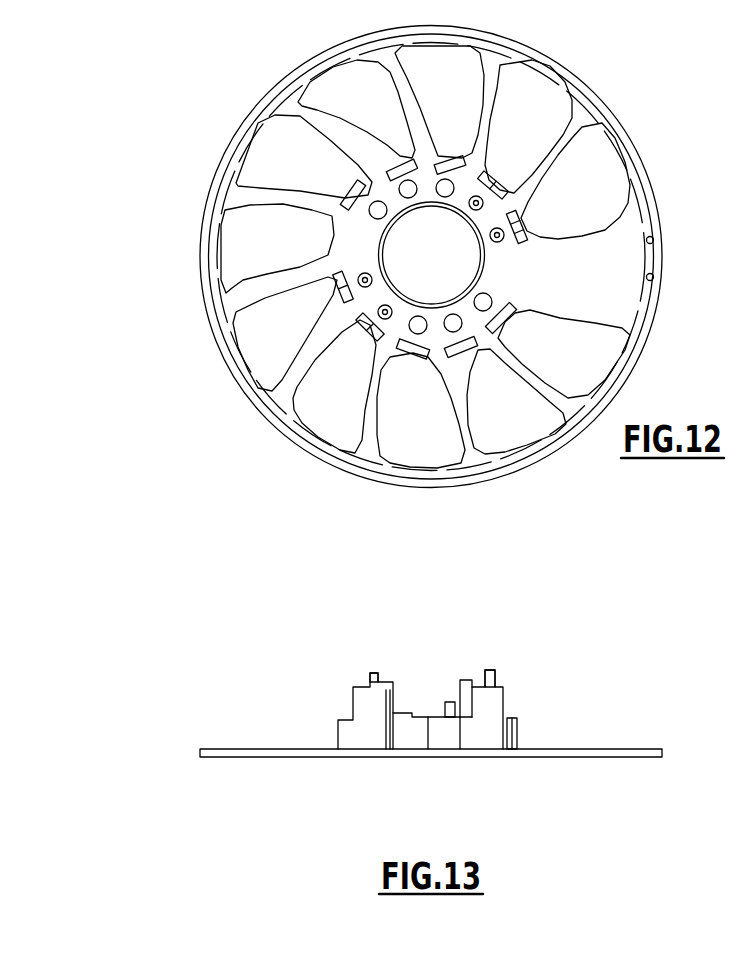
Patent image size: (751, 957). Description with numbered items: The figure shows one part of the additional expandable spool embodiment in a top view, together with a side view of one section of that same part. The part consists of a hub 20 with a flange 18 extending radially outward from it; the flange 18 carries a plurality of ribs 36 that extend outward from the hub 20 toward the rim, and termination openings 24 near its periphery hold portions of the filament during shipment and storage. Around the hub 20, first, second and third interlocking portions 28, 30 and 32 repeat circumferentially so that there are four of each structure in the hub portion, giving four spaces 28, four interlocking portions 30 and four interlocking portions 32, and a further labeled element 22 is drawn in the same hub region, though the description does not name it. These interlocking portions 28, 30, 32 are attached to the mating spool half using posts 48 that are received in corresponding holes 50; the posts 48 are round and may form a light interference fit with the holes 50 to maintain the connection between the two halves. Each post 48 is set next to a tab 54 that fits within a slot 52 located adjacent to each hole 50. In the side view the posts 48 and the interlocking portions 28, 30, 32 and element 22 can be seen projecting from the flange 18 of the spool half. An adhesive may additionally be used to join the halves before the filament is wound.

In FIG. 12, the flange 18 is at (647, 187).
In FIG. 13, the flange 18 is at (632, 752).
In FIG. 13, the hub 20 is at (540, 697).
In FIG. 12, the connector block 22 is at (478, 356).
In FIG. 13, the connector block 22 is at (467, 741).
In FIG. 12, the termination openings 24 is at (655, 276).
In FIG. 12, the first interlocking portion 28 is at (420, 361).
In FIG. 13, the first interlocking portion 28 is at (412, 733).
In FIG. 12, the second interlocking portion 30 is at (458, 362).
In FIG. 13, the second interlocking portion 30 is at (450, 725).
In FIG. 12, the third interlocking portion 32 is at (511, 323).
In FIG. 13, the third interlocking portion 32 is at (488, 700).
In FIG. 12, the ribs 36 is at (273, 197).
In FIG. 12, the post 48 is at (502, 222).
In FIG. 13, the post 48 is at (372, 665).
In FIG. 12, the hole 50 is at (437, 182).
In FIG. 12, the slot 52 is at (446, 152).
In FIG. 12, the tab 54 is at (502, 175).